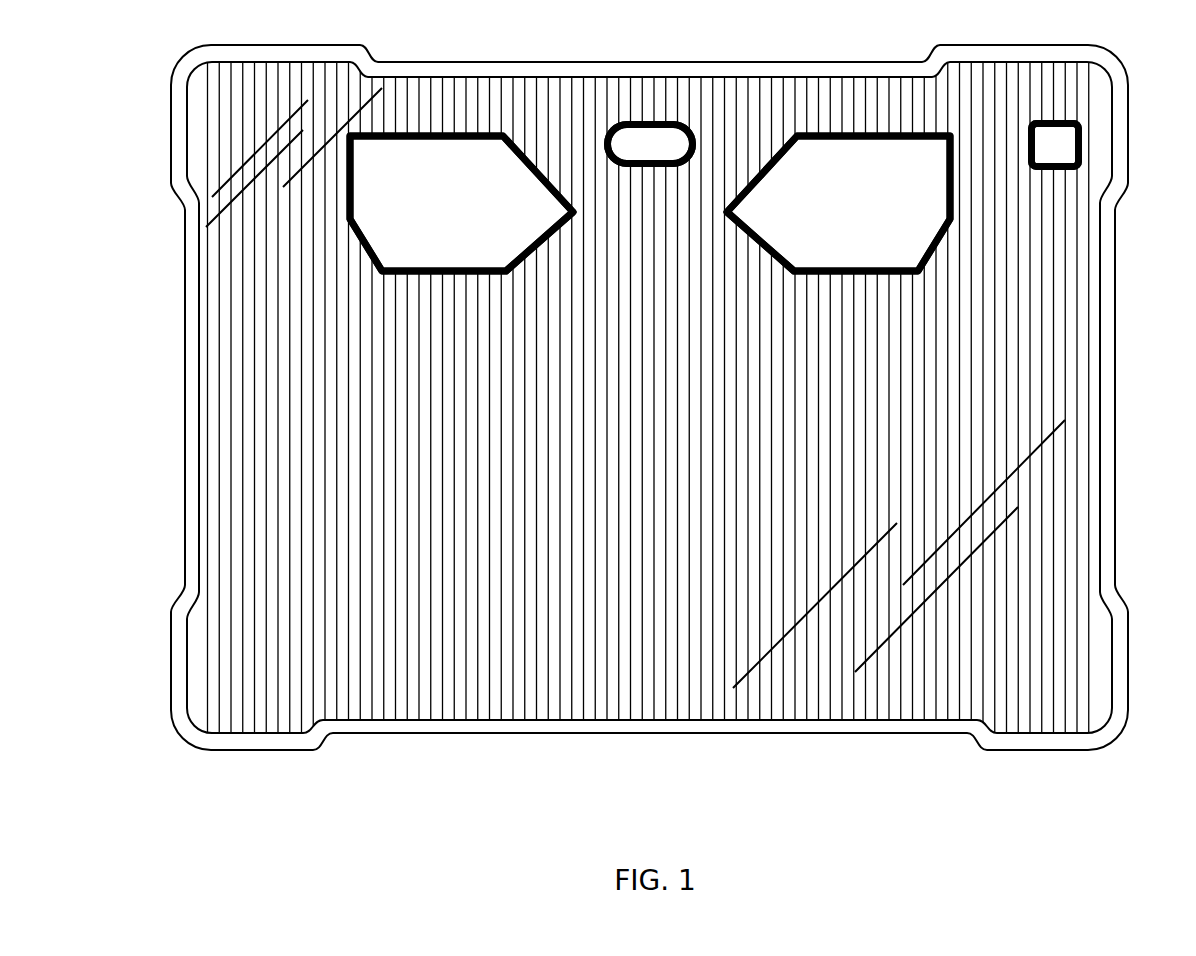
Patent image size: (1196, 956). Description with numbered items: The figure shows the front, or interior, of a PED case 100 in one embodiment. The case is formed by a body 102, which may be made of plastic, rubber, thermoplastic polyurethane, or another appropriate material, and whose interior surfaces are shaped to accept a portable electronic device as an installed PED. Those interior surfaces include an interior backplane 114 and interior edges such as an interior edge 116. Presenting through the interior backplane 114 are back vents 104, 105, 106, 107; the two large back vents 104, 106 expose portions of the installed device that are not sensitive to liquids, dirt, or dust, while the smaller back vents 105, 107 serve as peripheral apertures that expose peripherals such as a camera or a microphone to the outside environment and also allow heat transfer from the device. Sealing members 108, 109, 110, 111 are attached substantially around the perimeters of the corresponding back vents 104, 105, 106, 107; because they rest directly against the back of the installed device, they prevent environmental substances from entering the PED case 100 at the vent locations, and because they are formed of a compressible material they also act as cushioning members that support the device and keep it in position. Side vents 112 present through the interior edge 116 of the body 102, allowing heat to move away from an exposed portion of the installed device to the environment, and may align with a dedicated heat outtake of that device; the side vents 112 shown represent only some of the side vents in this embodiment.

The PED case 100 is at (215, 45).
The body 102 is at (523, 64).
The back vent 104 is at (430, 215).
The back vent 105 is at (632, 155).
The back vent 106 is at (822, 215).
The back vent 107 is at (1056, 145).
The sealing member 108 is at (520, 263).
The sealing member 109 is at (628, 171).
The sealing member 110 is at (822, 278).
The sealing member 111 is at (1062, 173).
The side vents 112 is at (928, 600).
The interior backplane 114 is at (602, 479).
The interior edge 116 is at (1101, 510).